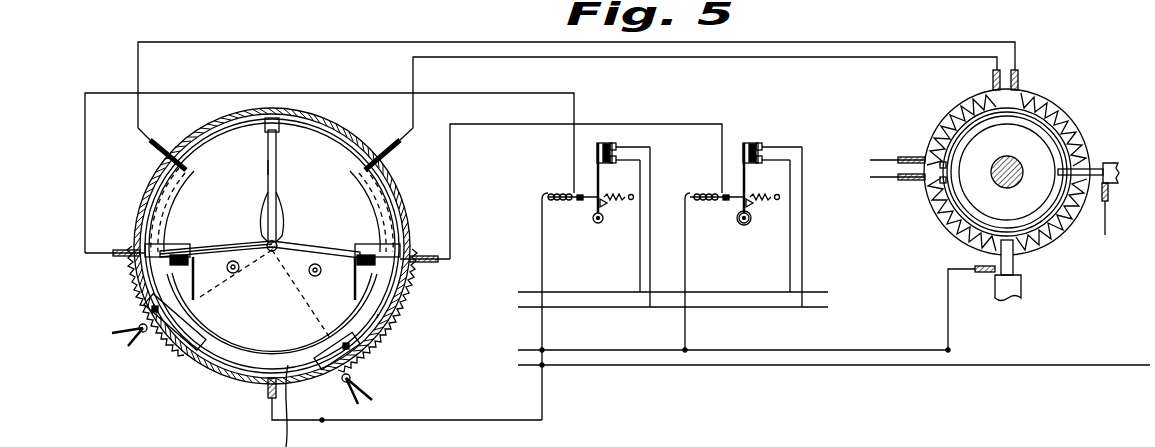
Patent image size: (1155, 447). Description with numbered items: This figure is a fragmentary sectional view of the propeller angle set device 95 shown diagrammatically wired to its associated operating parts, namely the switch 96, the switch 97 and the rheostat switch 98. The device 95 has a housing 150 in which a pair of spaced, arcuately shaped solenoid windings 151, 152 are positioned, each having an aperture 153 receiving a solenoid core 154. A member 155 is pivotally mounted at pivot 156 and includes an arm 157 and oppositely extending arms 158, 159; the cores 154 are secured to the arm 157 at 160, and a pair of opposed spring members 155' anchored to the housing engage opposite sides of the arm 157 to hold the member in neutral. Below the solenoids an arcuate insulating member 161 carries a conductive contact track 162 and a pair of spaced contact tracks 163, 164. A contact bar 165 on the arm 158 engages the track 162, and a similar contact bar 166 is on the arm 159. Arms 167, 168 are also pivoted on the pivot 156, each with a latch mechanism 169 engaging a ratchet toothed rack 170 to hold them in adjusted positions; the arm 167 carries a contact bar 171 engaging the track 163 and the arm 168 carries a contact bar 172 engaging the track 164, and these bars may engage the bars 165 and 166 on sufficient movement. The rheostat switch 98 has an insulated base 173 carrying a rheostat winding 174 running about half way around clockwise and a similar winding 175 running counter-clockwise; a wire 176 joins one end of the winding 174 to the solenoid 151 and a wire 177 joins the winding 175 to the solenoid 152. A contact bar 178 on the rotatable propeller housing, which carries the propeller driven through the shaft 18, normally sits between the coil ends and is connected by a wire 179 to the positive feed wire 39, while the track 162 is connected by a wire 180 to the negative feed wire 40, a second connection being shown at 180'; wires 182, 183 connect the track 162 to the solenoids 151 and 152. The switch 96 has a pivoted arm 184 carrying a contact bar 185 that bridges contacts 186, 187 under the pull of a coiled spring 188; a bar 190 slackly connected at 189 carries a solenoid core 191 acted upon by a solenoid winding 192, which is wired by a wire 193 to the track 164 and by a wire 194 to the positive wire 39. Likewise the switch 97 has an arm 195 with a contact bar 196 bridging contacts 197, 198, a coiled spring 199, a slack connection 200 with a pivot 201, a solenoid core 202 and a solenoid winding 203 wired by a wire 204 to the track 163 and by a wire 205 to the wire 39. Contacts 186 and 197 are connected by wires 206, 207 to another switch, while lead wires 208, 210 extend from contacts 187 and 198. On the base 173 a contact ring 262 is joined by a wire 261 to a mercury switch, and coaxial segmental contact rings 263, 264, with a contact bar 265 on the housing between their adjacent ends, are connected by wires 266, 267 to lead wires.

The shaft 18 is at (1010, 160).
The positive feed wire 39 is at (900, 350).
The negative feed wire 40 is at (884, 367).
The angle set device 95 is at (238, 380).
The switch 96 is at (598, 226).
The switch 97 is at (744, 226).
The rheostat switch 98 is at (1070, 108).
The housing 150 is at (332, 120).
The solenoid winding 151 is at (177, 197).
The solenoid winding 152 is at (368, 200).
The aperture 153 is at (160, 214).
The solenoid core 154 is at (223, 137).
The member 155 is at (292, 186).
The spring members 155' is at (275, 212).
The pivot 156 is at (283, 227).
The arm 157 is at (268, 167).
The arm 158 is at (336, 254).
The arm 159 is at (230, 250).
The securing point 160 is at (278, 130).
The arcuate member 161 is at (294, 406).
The contact track 162 is at (232, 342).
The contact track 163 is at (378, 314).
The contact track 164 is at (192, 345).
The contact bar 165 is at (398, 280).
The contact bar 166 is at (150, 282).
The arm 167 is at (298, 309).
The arm 168 is at (230, 296).
The latch mechanism 169 is at (153, 341).
The ratchet toothed rack 170 is at (390, 330).
The contact bar 171 is at (330, 350).
The contact bar 172 is at (195, 300).
The insulated base 173 is at (932, 140).
The rheostat winding 174 is at (1090, 147).
The rheostat winding 175 is at (940, 198).
The wire 176 is at (968, 47).
The wire 177 is at (863, 58).
The contact bar 178 is at (1015, 263).
The wire 179 is at (949, 318).
The wire 180 is at (255, 411).
The conductor 180' is at (407, 421).
The wire 182 is at (205, 288).
The wire 183 is at (355, 283).
The arm 184 is at (597, 153).
The contact bar 185 is at (612, 143).
The contact 186 is at (612, 164).
The contact 187 is at (617, 144).
The coiled spring 188 is at (612, 197).
The slack connection 189 is at (605, 203).
The bar 190 is at (591, 201).
The solenoid core 191 is at (575, 199).
The solenoid winding 192 is at (558, 193).
The wire 193 is at (500, 93).
The wire 194 is at (542, 250).
The arm 195 is at (744, 176).
The contact bar 196 is at (758, 143).
The contact 197 is at (760, 164).
The contact 198 is at (764, 144).
The coiled spring 199 is at (765, 199).
The armature wedge 200 is at (751, 204).
The pivot 201 is at (737, 202).
The solenoid core 202 is at (724, 199).
The solenoid winding 203 is at (706, 193).
The wire 204 is at (700, 124).
The wire 205 is at (686, 275).
The wire 206 is at (638, 272).
The wire 207 is at (790, 268).
The lead wire 208 is at (650, 247).
The lead wire 210 is at (802, 242).
The wire 261 is at (1107, 213).
The contact ring 262 is at (1060, 135).
The segmental contact ring 263 is at (948, 120).
The segmental contact ring 264 is at (960, 238).
The contact bar 265 is at (1106, 165).
The wire 266 is at (878, 161).
The wire 267 is at (884, 180).